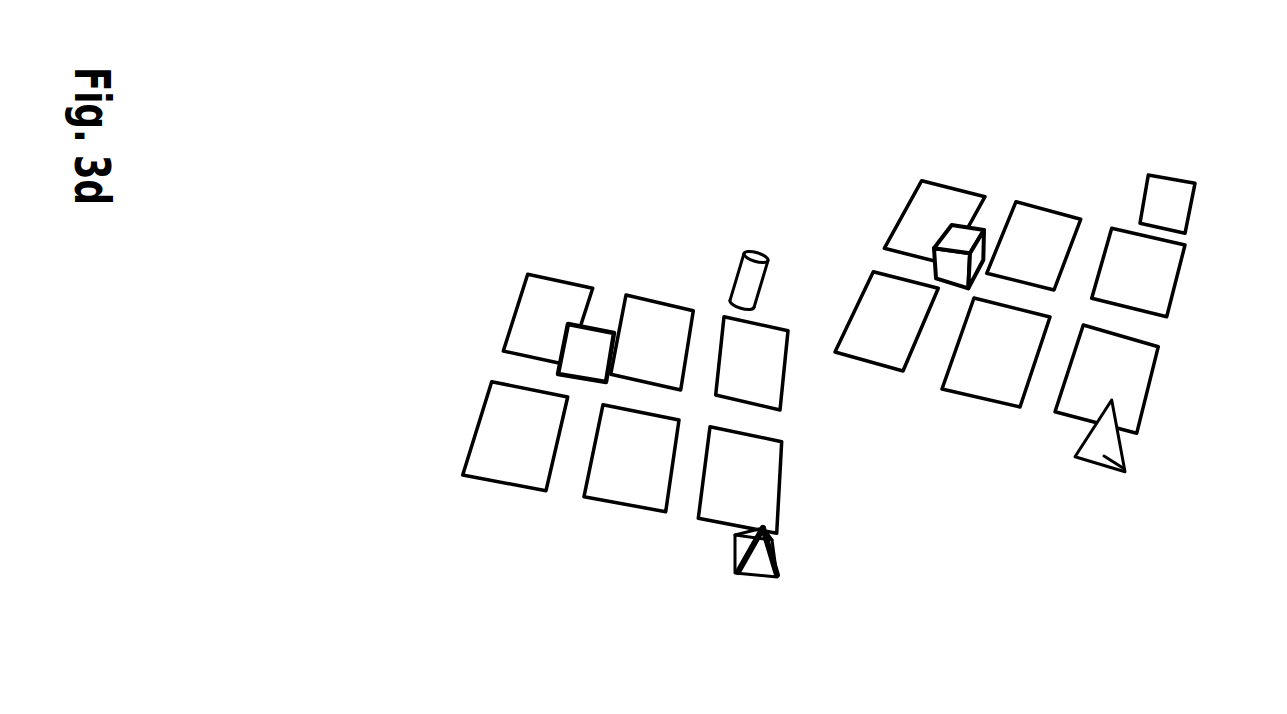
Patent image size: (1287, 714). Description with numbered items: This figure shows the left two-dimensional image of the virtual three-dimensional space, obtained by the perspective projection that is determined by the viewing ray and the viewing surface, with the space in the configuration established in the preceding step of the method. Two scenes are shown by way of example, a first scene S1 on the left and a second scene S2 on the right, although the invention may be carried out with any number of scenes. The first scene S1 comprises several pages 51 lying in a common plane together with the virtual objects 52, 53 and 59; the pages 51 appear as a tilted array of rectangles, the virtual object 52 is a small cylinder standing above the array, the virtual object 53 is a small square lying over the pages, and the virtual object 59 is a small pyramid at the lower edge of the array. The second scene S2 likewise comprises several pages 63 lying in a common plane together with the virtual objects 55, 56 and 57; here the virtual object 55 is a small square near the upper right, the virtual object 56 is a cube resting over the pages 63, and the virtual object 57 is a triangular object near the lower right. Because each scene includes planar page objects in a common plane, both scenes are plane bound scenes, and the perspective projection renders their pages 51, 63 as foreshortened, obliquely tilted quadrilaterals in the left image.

The scene S1 is at (717, 160).
The scene S2 is at (1114, 78).
The pages 51 is at (528, 307).
The virtual object 52 is at (760, 248).
The virtual object 53 is at (598, 325).
The virtual object 55 is at (1185, 202).
The virtual object 56 is at (978, 230).
The virtual object 57 is at (1127, 465).
The virtual object 59 is at (778, 557).
The pages 63 is at (1138, 382).